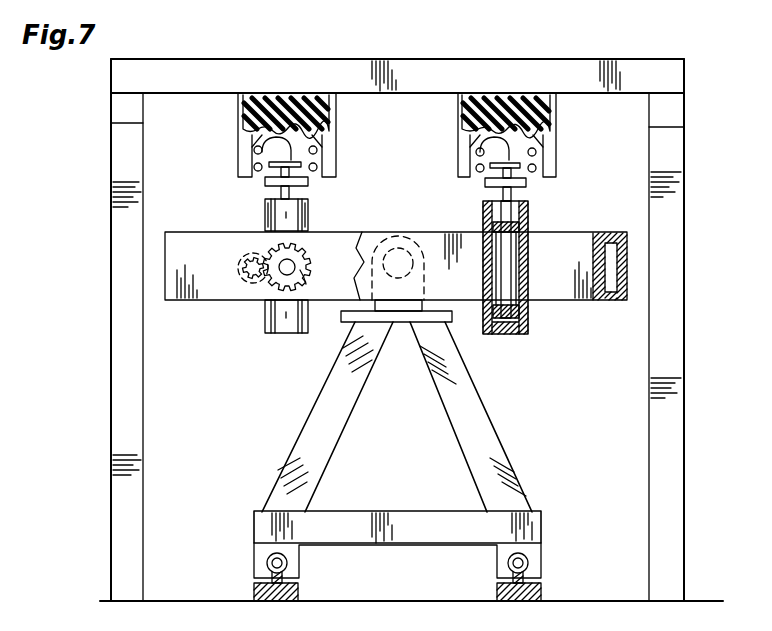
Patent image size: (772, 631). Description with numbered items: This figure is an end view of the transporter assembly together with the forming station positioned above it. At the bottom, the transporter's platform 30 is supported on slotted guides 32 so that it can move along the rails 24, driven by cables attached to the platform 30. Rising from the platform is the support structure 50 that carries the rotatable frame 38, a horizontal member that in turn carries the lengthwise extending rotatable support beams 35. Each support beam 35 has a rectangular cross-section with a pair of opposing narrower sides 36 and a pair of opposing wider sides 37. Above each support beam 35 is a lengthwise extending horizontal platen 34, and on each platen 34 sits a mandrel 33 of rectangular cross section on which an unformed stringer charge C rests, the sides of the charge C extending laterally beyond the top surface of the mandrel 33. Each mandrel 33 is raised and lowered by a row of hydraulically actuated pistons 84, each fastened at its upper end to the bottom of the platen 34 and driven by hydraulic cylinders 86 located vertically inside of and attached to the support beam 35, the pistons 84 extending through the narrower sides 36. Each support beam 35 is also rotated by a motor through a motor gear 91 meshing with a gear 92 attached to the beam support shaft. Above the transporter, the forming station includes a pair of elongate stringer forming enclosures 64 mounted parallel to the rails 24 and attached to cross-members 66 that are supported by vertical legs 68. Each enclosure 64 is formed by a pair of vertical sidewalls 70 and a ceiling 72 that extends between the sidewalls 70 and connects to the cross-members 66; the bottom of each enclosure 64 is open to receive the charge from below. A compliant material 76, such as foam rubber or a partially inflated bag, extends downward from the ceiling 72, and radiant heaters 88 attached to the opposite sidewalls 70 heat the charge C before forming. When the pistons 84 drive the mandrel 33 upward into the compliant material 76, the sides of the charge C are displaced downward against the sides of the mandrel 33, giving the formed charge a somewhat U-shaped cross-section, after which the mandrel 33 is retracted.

The rails 24 is at (268, 560).
The platform 30 is at (540, 527).
The slotted guides 32 is at (297, 555).
The mandrels 33 is at (270, 166).
The platen 34 is at (308, 184).
The support beam 35 is at (278, 222).
The narrower sides 36 is at (309, 206).
The wider sides 37 is at (310, 224).
The frame 38 is at (449, 0).
The A-frame support 50 is at (290, 454).
The stringer forming enclosures 64 is at (242, 80).
The cross-members 66 is at (545, 64).
The vertical legs 68 is at (675, 160).
The vertical sidewalls 70 is at (336, 131).
The ceiling 72 is at (318, 94).
The compliant material 76 is at (270, 100).
The hydraulically actuated pistons 84 is at (529, 216).
The hydraulic cylinders 86 is at (505, 268).
The radiant heaters 88 is at (248, 155).
The motor gear 91 is at (253, 284).
The gear 92 is at (304, 285).
The stringer charges C is at (262, 135).